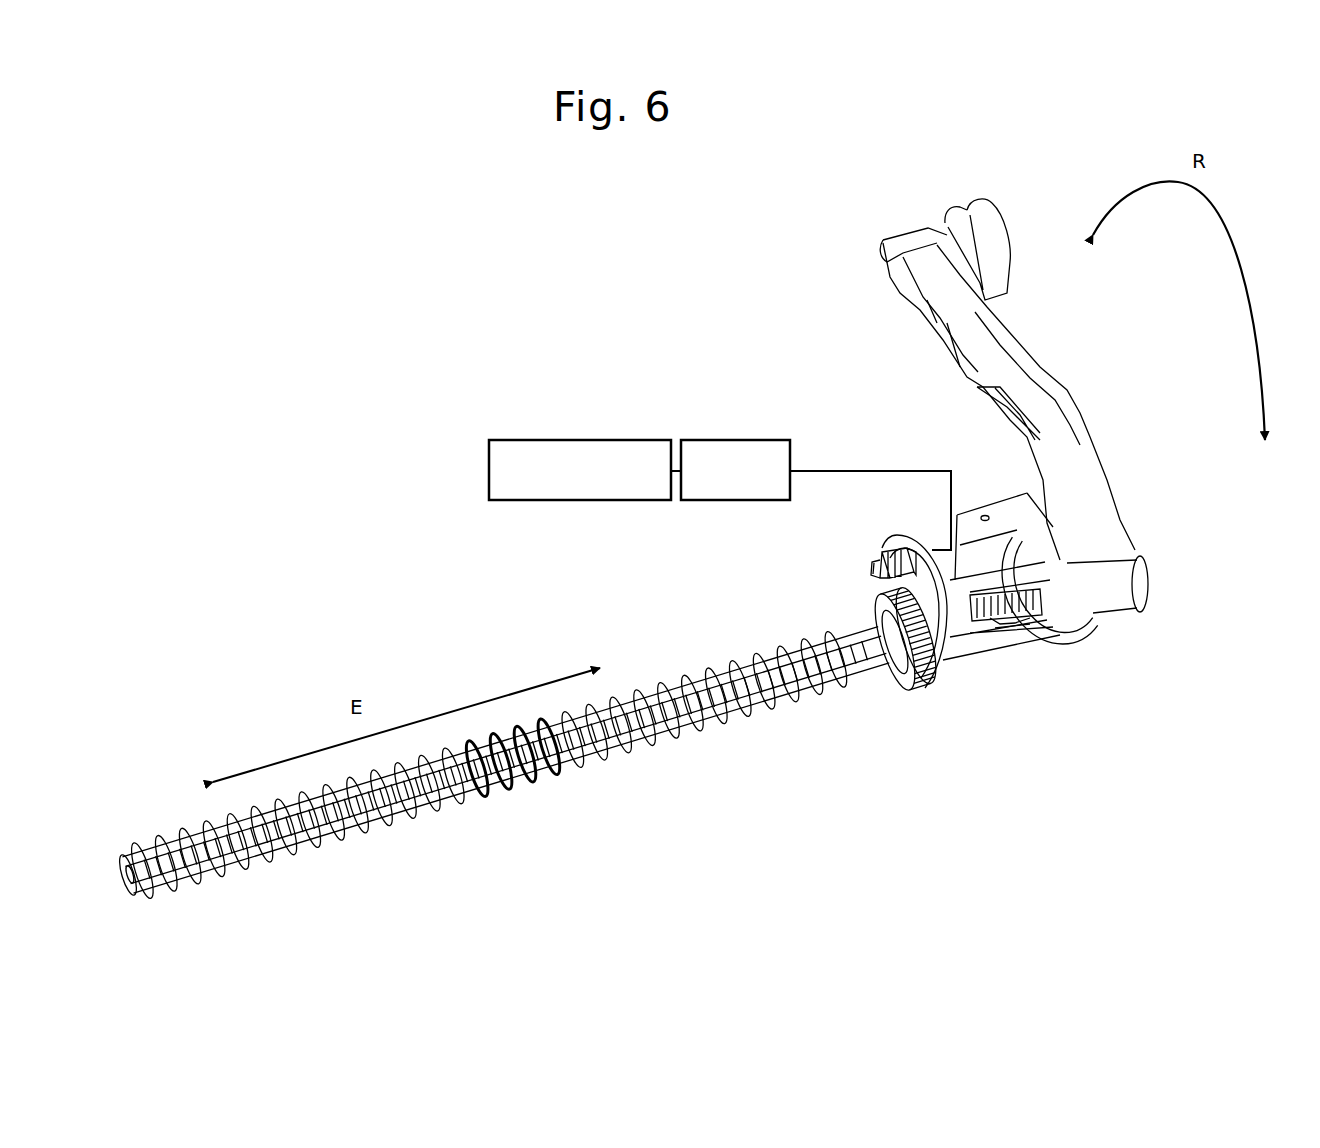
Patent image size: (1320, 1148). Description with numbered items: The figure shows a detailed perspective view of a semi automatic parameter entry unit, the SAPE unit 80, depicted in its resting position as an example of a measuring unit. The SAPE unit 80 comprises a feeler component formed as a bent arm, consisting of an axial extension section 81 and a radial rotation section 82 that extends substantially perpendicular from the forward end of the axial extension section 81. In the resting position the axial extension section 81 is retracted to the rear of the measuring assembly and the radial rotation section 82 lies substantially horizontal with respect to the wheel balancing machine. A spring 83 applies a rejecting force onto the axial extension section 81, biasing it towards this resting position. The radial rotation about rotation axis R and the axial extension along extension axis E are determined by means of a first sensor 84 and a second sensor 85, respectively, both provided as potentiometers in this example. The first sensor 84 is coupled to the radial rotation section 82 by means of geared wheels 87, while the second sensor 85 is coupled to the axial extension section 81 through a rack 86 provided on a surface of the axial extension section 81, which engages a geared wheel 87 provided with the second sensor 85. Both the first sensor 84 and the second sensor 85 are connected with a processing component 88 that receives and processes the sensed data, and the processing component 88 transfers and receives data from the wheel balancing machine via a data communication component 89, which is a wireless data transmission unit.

The SAPE unit 80 is at (356, 456).
The axial extension section 81 is at (665, 740).
The radial rotation section 82 is at (1107, 503).
The spring 83 is at (620, 753).
The first sensor 84 is at (888, 546).
The second sensor 85 is at (997, 572).
The rack 86 is at (985, 625).
The geared wheels 87 is at (878, 565).
The processing component 88 is at (718, 438).
The data communication component 89 is at (630, 438).